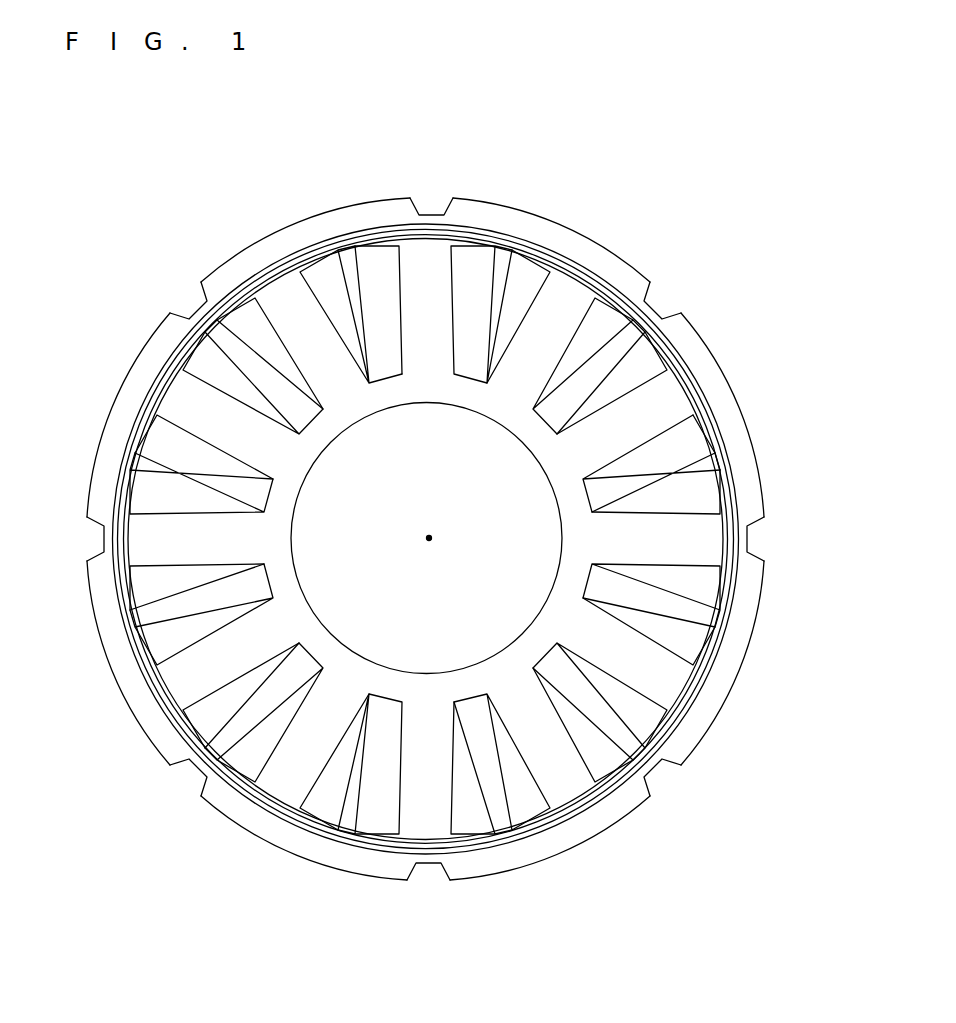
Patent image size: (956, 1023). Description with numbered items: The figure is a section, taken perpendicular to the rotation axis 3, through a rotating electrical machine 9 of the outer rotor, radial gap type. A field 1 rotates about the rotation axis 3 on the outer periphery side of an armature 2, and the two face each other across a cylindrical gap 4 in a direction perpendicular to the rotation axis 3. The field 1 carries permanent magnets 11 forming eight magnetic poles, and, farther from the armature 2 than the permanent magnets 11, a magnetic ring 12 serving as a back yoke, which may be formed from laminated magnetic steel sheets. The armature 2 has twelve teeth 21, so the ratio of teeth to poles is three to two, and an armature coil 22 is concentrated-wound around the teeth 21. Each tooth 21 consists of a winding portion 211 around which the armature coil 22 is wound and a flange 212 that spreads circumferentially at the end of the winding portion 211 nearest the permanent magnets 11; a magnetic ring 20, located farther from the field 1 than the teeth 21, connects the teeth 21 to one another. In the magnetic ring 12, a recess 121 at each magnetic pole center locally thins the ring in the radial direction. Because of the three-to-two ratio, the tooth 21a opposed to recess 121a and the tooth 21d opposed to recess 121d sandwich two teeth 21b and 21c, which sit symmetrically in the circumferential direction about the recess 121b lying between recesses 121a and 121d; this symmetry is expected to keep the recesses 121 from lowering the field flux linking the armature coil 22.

The field 1 is at (642, 199).
The armature 2 is at (770, 424).
The rotation axis 3 is at (431, 539).
The gap 4 is at (623, 291).
The rotating electrical machine 9 is at (554, 880).
The permanent magnet 11 is at (606, 247).
The magnetic ring 12 is at (557, 231).
The recess 121 is at (659, 306).
The recess 121a is at (87, 538).
The recess 121b is at (182, 775).
The recess 121d is at (426, 881).
The magnetic ring 20 is at (678, 450).
The tooth 21 is at (672, 392).
The tooth 21a is at (195, 540).
The tooth 21b is at (185, 681).
The tooth 21c is at (285, 776).
The tooth 21d is at (415, 791).
The armature coil 22 is at (650, 357).
The winding portion 211 is at (638, 665).
The flange 212 is at (652, 732).